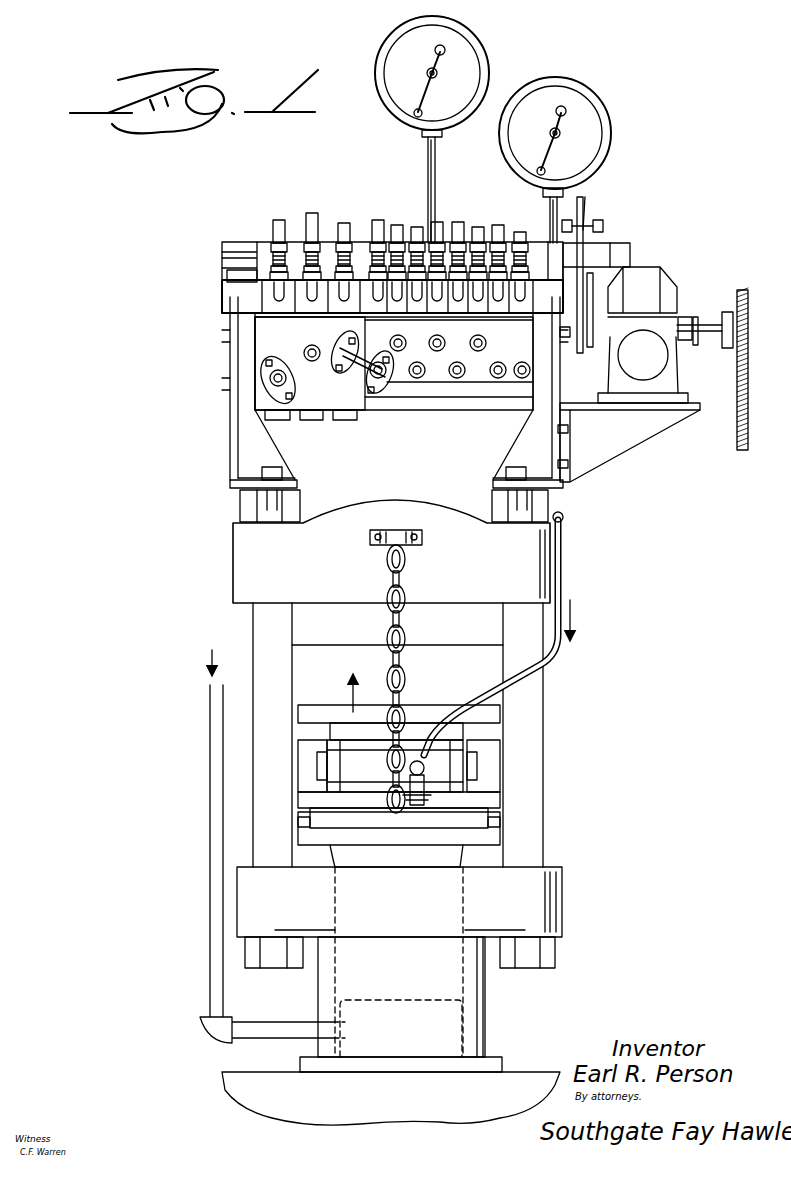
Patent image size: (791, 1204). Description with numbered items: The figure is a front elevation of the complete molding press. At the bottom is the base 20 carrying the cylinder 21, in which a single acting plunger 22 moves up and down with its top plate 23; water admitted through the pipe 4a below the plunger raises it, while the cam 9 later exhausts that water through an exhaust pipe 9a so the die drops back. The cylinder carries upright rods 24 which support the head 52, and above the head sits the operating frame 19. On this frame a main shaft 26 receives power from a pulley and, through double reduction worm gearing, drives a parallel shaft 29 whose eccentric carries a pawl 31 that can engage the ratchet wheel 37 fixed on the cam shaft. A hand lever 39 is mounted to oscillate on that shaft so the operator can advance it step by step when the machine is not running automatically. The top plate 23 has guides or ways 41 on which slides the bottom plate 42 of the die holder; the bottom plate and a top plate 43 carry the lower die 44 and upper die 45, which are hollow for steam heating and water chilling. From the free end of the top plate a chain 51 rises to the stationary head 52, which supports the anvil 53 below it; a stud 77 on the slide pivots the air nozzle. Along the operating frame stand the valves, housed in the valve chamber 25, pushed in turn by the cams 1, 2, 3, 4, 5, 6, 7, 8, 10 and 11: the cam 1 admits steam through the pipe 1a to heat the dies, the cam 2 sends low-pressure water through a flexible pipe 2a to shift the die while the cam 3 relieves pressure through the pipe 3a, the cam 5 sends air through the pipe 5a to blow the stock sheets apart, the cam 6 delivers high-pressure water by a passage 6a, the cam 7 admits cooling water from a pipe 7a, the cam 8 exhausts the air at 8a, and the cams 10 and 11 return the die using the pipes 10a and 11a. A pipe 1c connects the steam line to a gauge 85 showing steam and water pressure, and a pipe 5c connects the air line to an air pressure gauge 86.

The cam 1 is at (496, 256).
The cam 2 is at (373, 233).
The cam 3 is at (437, 252).
The cam 4 is at (340, 228).
The cam 5 is at (522, 236).
The cam 6 is at (274, 226).
The cam 7 is at (458, 255).
The cam 8 is at (478, 259).
The cam 9 is at (307, 218).
The cam 10 is at (419, 256).
The cam 11 is at (396, 255).
The pipe 1a is at (498, 362).
The flexible pipe 2a is at (382, 380).
The pipe 3a is at (446, 334).
The pipe 5a is at (517, 380).
The pipe or passage 6a is at (288, 383).
The pipe 7a is at (462, 380).
The exhaust outlet 8a is at (484, 330).
The exhaust pipe 9a is at (312, 340).
The pipe 10a is at (420, 380).
The pipe 11a is at (403, 330).
The pipe 1c is at (435, 172).
The pipe 5c is at (553, 208).
The pipe 4a is at (210, 970).
The operating frame 19 is at (255, 423).
The base 20 is at (400, 1113).
The cylinder 21 is at (487, 1020).
The single acting plunger 22 is at (420, 983).
The top plate 23 is at (417, 838).
The upright rods 24 is at (258, 622).
The valve chamber 25 is at (357, 400).
The main shaft 26 is at (708, 327).
The parallel shaft 29 is at (605, 298).
The pawl 31 is at (641, 366).
The ratchet wheel 37 is at (576, 273).
The hand lever 39 is at (593, 202).
The guides or ways 41 is at (302, 822).
The bottom plate 42 is at (380, 822).
The top plate 43 is at (308, 710).
The lower die 44 is at (493, 780).
The upper die 45 is at (490, 743).
The chain 51 is at (390, 615).
The head 52 is at (245, 570).
The anvil 53 is at (478, 642).
The stud 77 is at (426, 788).
The gauge 85 is at (462, 67).
The air pressure gauge 86 is at (580, 147).